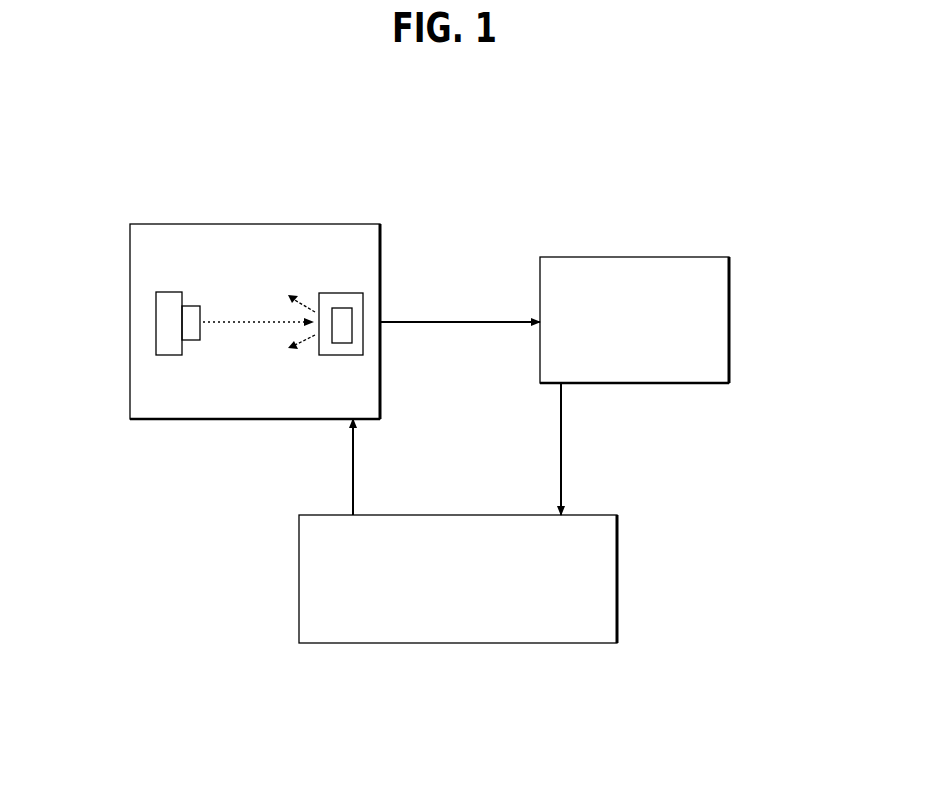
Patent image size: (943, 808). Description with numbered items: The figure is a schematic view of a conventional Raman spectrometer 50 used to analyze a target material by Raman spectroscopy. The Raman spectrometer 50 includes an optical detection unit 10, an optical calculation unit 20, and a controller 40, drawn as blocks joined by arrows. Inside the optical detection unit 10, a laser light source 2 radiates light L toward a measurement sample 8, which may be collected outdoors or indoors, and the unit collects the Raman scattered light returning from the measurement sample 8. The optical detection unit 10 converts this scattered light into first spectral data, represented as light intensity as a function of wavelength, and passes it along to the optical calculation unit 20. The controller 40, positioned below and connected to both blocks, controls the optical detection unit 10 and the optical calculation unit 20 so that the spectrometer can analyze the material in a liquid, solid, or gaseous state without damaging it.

The laser light source 2 is at (167, 325).
The light L is at (235, 322).
The measurement sample 8 is at (342, 355).
The optical detection unit 10 is at (163, 419).
The optical calculation unit 20 is at (729, 366).
The controller 40 is at (422, 643).
The Raman spectrometer 50 is at (761, 168).